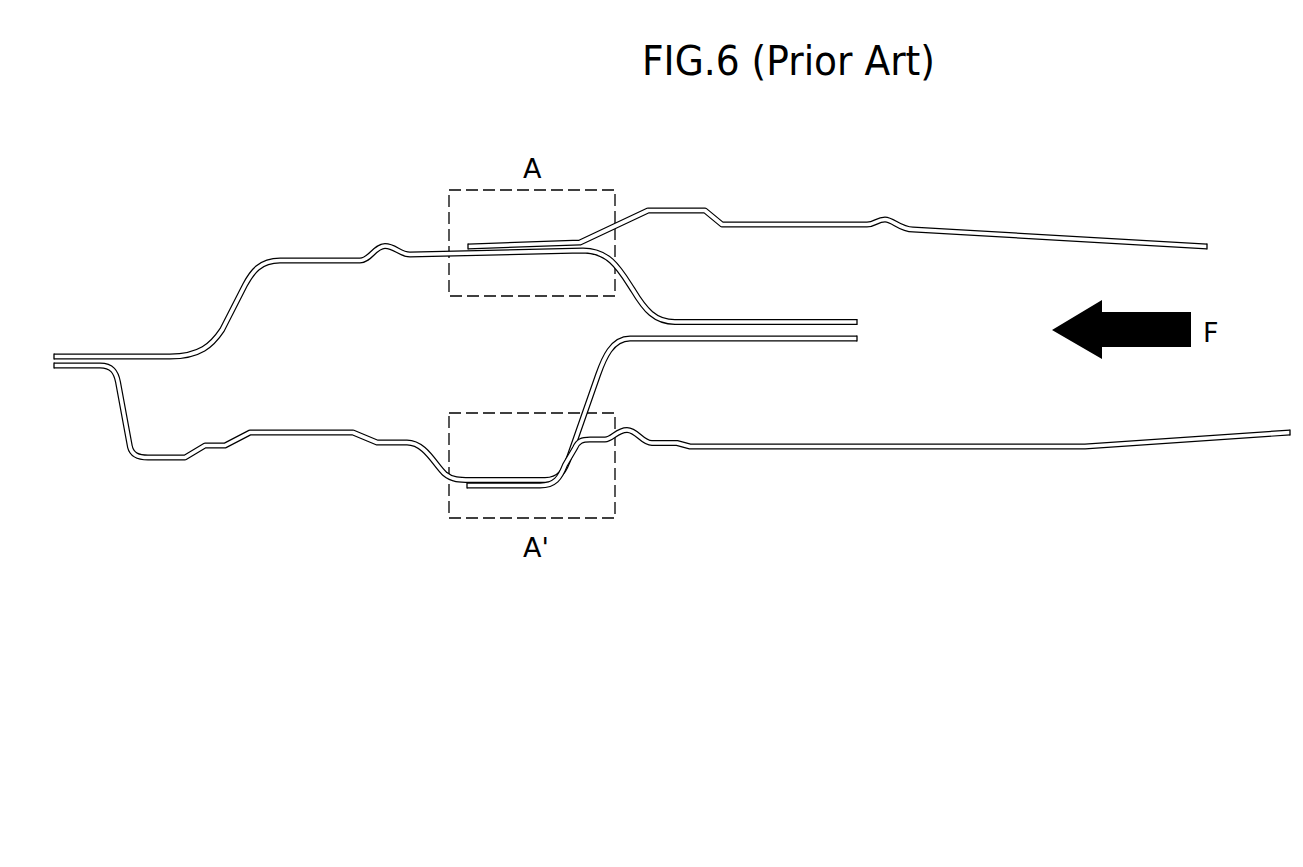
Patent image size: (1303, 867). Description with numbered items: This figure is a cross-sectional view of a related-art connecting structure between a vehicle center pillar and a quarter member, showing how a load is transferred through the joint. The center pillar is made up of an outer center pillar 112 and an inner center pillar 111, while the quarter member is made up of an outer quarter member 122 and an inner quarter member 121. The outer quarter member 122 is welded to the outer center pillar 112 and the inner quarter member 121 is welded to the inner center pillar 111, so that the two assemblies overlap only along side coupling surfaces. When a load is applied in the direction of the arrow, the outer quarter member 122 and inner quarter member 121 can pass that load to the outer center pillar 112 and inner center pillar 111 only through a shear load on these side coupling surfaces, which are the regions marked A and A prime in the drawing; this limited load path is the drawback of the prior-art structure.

The inner center pillar 111 is at (305, 432).
The outer center pillar 112 is at (267, 265).
The inner quarter member 121 is at (920, 445).
The outer quarter member 122 is at (907, 228).